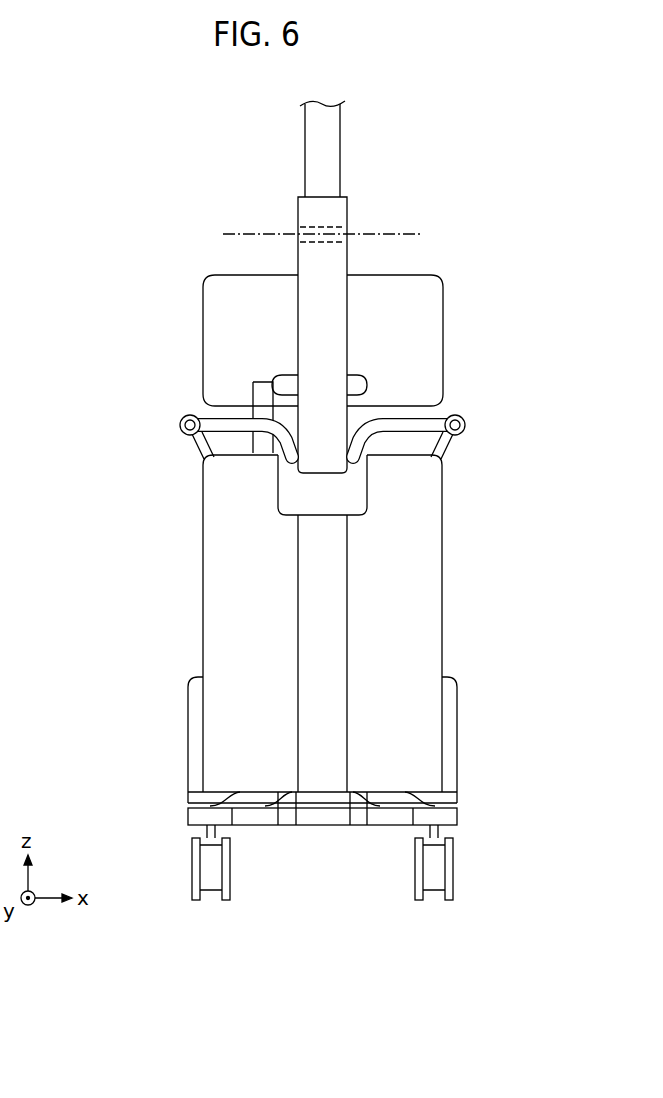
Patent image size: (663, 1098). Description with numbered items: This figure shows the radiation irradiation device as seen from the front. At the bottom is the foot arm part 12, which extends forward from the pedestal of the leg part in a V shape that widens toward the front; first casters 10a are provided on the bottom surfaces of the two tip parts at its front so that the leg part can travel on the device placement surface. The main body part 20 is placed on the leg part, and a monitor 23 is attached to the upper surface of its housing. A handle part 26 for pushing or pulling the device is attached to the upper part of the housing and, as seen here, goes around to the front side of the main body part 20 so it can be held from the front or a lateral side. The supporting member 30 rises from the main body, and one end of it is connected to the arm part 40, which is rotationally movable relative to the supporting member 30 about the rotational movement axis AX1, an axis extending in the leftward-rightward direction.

The arm part 40 is at (342, 137).
The rotational movement axis AX1 is at (349, 234).
The supporting member 30 is at (343, 317).
The monitor 23 is at (444, 300).
The handle part 26 is at (213, 424).
The main body part 20 is at (443, 563).
The foot arm part 12 is at (188, 812).
The first casters 10a is at (192, 862).